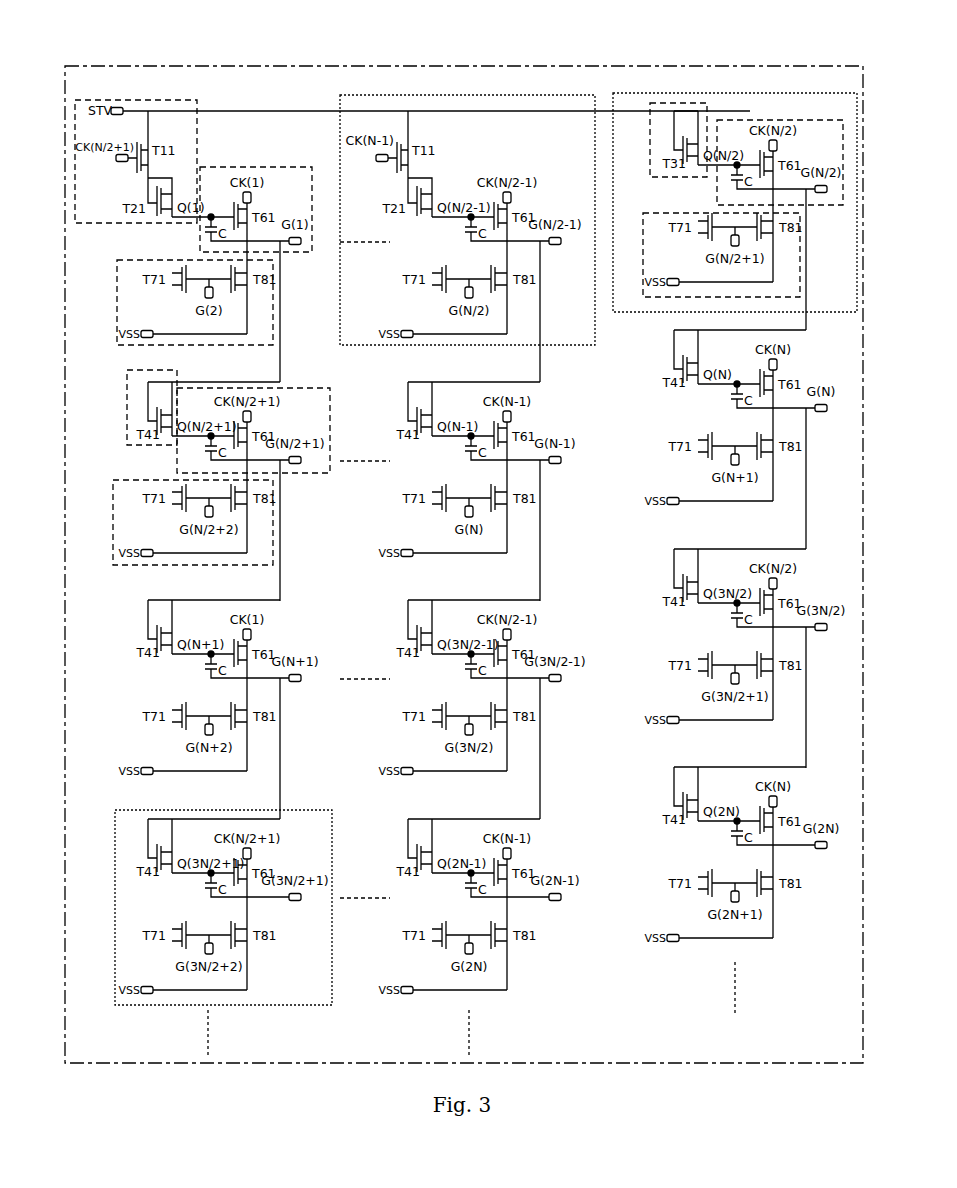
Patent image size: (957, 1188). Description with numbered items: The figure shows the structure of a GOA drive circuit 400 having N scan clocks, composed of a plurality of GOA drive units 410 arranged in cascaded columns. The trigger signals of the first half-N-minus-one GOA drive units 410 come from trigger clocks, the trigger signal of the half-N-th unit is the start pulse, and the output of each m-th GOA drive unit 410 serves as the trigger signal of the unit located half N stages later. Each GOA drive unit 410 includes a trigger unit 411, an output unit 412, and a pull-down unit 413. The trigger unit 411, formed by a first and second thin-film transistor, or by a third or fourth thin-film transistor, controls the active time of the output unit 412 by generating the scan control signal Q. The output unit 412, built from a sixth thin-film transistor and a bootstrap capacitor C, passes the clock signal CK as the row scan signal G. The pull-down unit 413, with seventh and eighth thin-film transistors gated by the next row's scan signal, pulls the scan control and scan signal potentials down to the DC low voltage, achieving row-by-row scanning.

The GOA drive circuit 400 is at (470, 66).
The GOA drive unit 410 is at (140, 810).
The trigger unit 411 is at (136, 103).
The output unit 412 is at (252, 167).
The pull-down unit 413 is at (117, 303).